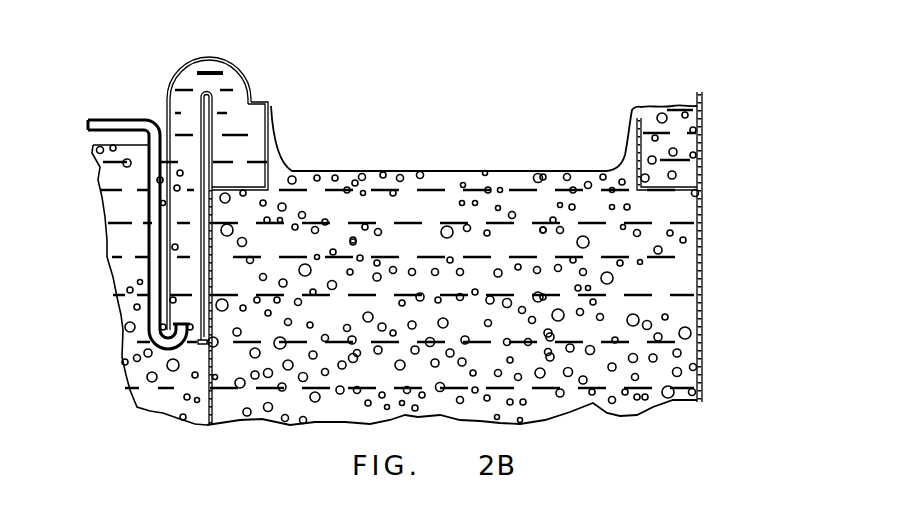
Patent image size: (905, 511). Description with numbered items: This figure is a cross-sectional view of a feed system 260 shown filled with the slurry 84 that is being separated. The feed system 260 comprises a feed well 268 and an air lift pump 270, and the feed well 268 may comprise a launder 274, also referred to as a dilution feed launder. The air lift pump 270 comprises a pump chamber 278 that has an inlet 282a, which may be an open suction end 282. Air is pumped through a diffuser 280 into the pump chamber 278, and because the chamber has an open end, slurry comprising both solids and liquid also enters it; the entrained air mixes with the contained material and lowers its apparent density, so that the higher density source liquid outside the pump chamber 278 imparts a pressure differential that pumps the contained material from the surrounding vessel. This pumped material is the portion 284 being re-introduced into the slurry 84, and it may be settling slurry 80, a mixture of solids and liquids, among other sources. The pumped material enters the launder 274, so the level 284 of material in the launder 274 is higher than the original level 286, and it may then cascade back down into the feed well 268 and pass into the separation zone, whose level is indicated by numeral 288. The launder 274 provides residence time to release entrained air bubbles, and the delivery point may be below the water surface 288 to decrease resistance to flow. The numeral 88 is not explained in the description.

The feed system 260 is at (712, 206).
The feed well 268 is at (653, 273).
The air lift pump 270 is at (158, 103).
The launder 274 is at (284, 170).
The pump chamber 278 is at (208, 55).
The diffuser 280 is at (108, 118).
The open suction end 282 is at (193, 342).
The inlet 282a is at (202, 342).
The portion 284 is at (261, 117).
The original level 286 is at (128, 143).
The level of material in the separation zone 288 is at (304, 170).
The slurry 84 is at (444, 170).
The soil region 88 is at (117, 220).
The settling slurry 80 is at (147, 378).